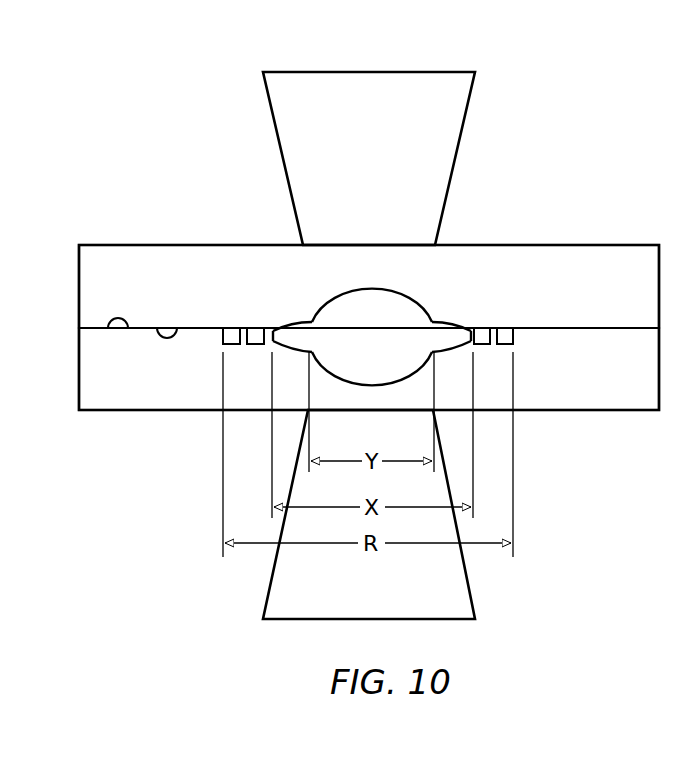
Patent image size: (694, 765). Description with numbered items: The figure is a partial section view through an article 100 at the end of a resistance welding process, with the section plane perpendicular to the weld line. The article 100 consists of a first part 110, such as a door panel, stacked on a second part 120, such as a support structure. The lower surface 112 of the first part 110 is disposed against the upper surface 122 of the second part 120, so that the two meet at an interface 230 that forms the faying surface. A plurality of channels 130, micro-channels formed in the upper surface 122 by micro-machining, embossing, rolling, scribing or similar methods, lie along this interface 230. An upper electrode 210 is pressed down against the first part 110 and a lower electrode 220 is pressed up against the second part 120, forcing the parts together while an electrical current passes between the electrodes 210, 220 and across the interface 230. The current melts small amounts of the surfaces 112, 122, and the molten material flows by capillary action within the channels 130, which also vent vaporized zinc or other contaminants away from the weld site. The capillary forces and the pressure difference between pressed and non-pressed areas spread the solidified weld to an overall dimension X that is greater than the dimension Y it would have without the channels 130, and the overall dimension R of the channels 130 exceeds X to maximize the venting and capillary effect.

The article 100 is at (573, 240).
The first part 110 is at (76, 281).
The second part 120 is at (76, 389).
The interface 230 is at (76, 328).
The lower surface 112 is at (176, 327).
The upper surface 122 is at (125, 327).
The channels 130 is at (518, 337).
The upper electrode 210 is at (465, 120).
The lower electrode 220 is at (472, 592).